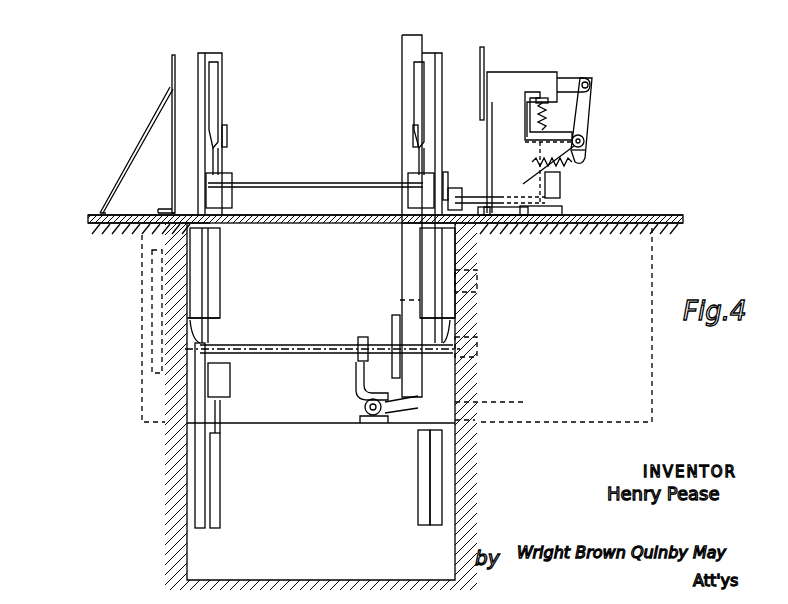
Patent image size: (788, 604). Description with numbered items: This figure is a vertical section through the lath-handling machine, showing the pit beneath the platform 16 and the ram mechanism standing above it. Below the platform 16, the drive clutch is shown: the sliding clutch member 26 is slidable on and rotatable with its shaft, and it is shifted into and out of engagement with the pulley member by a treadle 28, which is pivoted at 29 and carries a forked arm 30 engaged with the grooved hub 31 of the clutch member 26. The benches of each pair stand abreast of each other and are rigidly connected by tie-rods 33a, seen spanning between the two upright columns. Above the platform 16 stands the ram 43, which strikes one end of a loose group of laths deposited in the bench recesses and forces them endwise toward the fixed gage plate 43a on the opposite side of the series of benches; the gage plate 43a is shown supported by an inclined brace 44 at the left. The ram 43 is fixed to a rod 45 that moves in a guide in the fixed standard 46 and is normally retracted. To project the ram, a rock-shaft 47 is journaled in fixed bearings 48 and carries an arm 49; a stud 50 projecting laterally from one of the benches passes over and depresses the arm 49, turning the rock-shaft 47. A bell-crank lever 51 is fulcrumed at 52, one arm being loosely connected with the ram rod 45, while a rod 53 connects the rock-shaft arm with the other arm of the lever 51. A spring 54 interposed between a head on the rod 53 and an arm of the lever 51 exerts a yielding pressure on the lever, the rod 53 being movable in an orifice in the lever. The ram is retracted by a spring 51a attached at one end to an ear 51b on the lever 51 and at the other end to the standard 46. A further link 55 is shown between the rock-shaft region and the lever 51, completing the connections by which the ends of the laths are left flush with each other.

The platform 16 is at (583, 214).
The sliding clutch member 26 is at (392, 320).
The treadle 28 is at (410, 406).
The pivot 29 is at (370, 420).
The forked arm 30 is at (363, 380).
The grooved hub 31 is at (358, 346).
The tie-rods 33a is at (313, 184).
The ram 43 is at (484, 60).
The fixed gage plate 43a is at (176, 57).
The brace 44 is at (163, 88).
The rod 45 is at (567, 80).
The fixed standard 46 is at (505, 128).
The rock-shaft 47 is at (478, 198).
The fixed bearings 48 is at (485, 222).
The arm 49 is at (446, 172).
The stud 50 is at (452, 190).
The bell-crank lever 51 is at (587, 120).
The spring 51a is at (582, 164).
The ear 51b is at (590, 157).
The fulcrum 52 is at (585, 141).
The rod 53 is at (548, 178).
The spring 54 is at (546, 112).
The link 55 is at (541, 165).